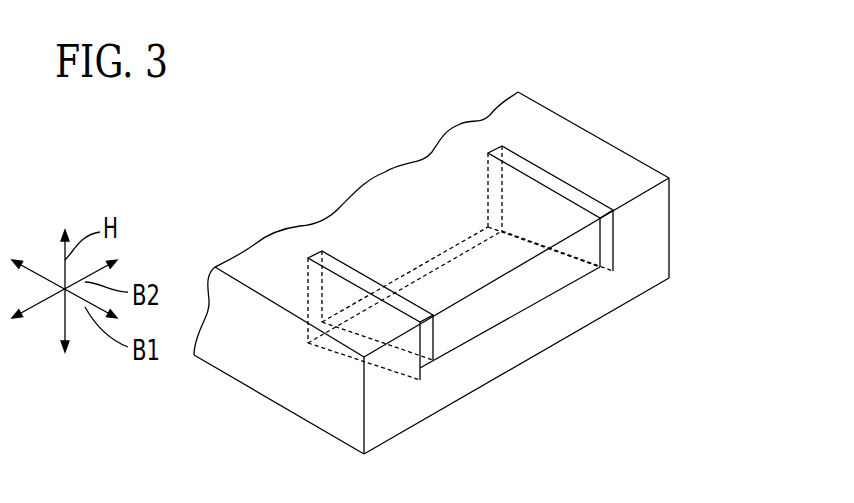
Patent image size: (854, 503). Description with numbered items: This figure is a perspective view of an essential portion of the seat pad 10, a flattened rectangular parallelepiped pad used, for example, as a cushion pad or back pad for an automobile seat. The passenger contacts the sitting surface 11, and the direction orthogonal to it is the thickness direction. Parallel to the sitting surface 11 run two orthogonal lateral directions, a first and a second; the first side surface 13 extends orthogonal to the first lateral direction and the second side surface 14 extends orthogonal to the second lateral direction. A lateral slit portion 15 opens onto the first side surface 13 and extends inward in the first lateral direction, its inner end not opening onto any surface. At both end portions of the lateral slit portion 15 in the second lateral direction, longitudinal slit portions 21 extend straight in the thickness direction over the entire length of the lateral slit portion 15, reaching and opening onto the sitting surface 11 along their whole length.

The seat pad 10 is at (678, 92).
The sitting surface 11 is at (540, 125).
The first side surface 13 is at (493, 358).
The second side surface 14 is at (315, 385).
The lateral slit portion 15 is at (540, 305).
The longitudinal slit portion 21 is at (350, 268).